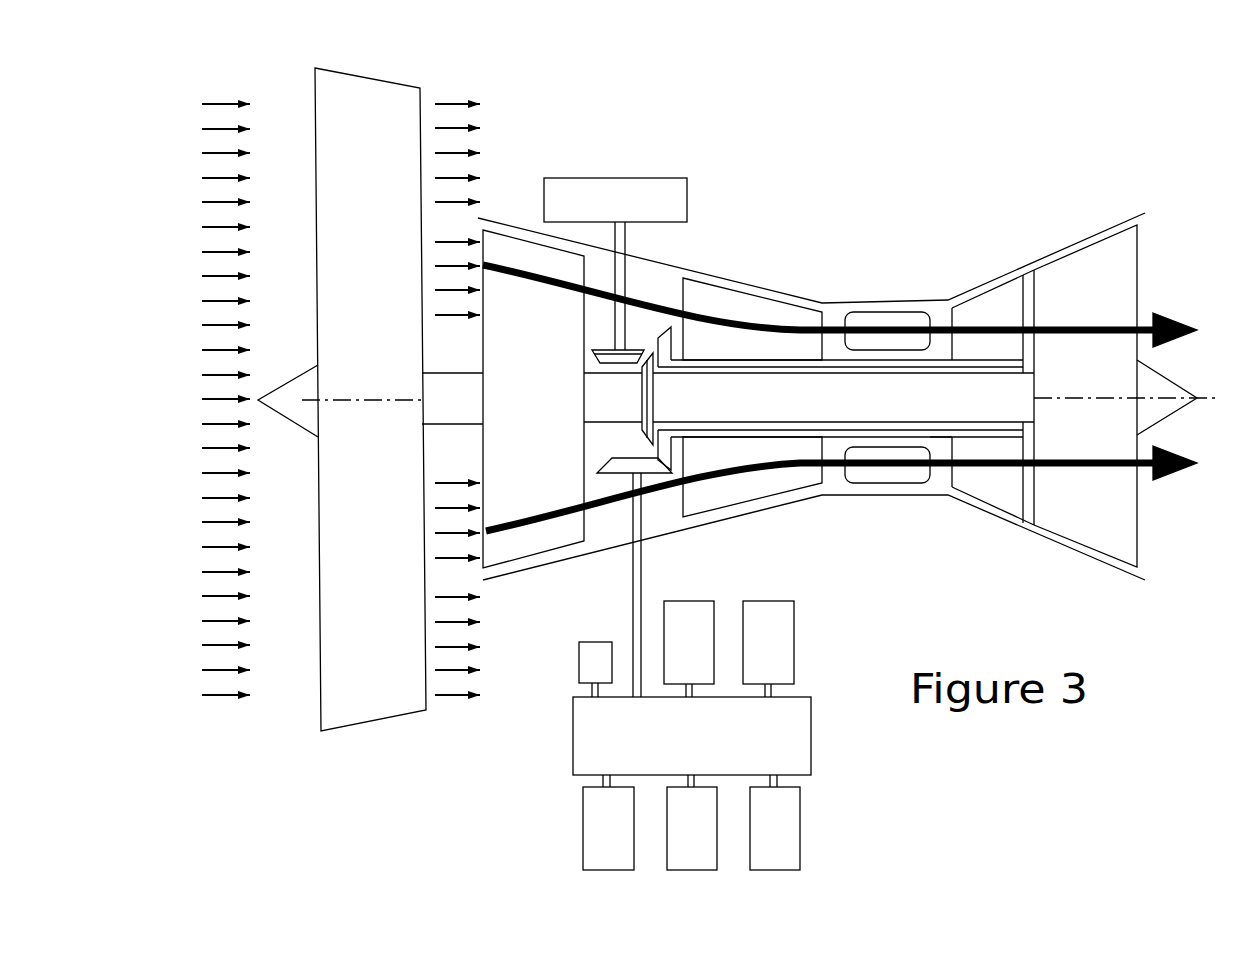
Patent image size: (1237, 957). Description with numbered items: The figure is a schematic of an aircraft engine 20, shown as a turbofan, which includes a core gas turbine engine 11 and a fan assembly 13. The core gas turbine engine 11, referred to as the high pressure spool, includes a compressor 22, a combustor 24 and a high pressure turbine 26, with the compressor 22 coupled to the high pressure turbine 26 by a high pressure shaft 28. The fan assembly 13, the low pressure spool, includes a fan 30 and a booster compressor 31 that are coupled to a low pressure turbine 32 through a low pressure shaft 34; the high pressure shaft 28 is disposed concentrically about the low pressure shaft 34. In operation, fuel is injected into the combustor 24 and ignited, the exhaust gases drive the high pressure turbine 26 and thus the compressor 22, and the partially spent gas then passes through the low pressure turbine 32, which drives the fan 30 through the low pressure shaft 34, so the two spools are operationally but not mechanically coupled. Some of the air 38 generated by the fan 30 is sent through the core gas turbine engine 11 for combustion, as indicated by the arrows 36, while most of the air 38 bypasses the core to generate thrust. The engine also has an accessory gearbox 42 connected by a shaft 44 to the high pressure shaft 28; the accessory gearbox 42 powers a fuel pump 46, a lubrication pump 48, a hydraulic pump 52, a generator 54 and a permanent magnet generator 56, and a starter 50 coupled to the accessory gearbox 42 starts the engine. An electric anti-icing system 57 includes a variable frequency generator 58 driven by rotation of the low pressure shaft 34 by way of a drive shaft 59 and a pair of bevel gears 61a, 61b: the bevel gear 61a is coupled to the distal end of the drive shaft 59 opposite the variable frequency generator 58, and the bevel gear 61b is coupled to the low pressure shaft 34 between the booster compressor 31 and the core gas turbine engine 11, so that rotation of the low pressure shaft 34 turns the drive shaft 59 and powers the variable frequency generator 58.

The core gas turbine engine 11 is at (939, 479).
The fan assembly 13 is at (768, 408).
The aircraft engine 20 is at (941, 600).
The compressor 22 is at (752, 294).
The combustor 24 is at (887, 311).
The high pressure turbine 26 is at (1003, 297).
The high pressure shaft 28 is at (837, 357).
The fan 30 is at (384, 80).
The booster compressor 31 is at (509, 233).
The low pressure turbine 32 is at (1080, 521).
The low pressure shaft 34 is at (945, 390).
The arrows depicting core air 36 is at (1155, 318).
The air 38 is at (449, 102).
The accessory gearbox 42 is at (811, 742).
The shaft 44 is at (641, 583).
The fuel pump 46 is at (583, 830).
The lubrication pump 48 is at (793, 622).
The starter 50 is at (717, 810).
The hydraulic pump 52 is at (800, 848).
The generator 54 is at (714, 653).
The permanent magnet generator 56 is at (579, 660).
The electric anti-icing system 57 is at (632, 274).
The variable frequency generator 58 is at (688, 200).
The drive shaft 59 is at (626, 240).
The bevel gear 61a is at (598, 349).
The bevel gear 61b is at (645, 400).